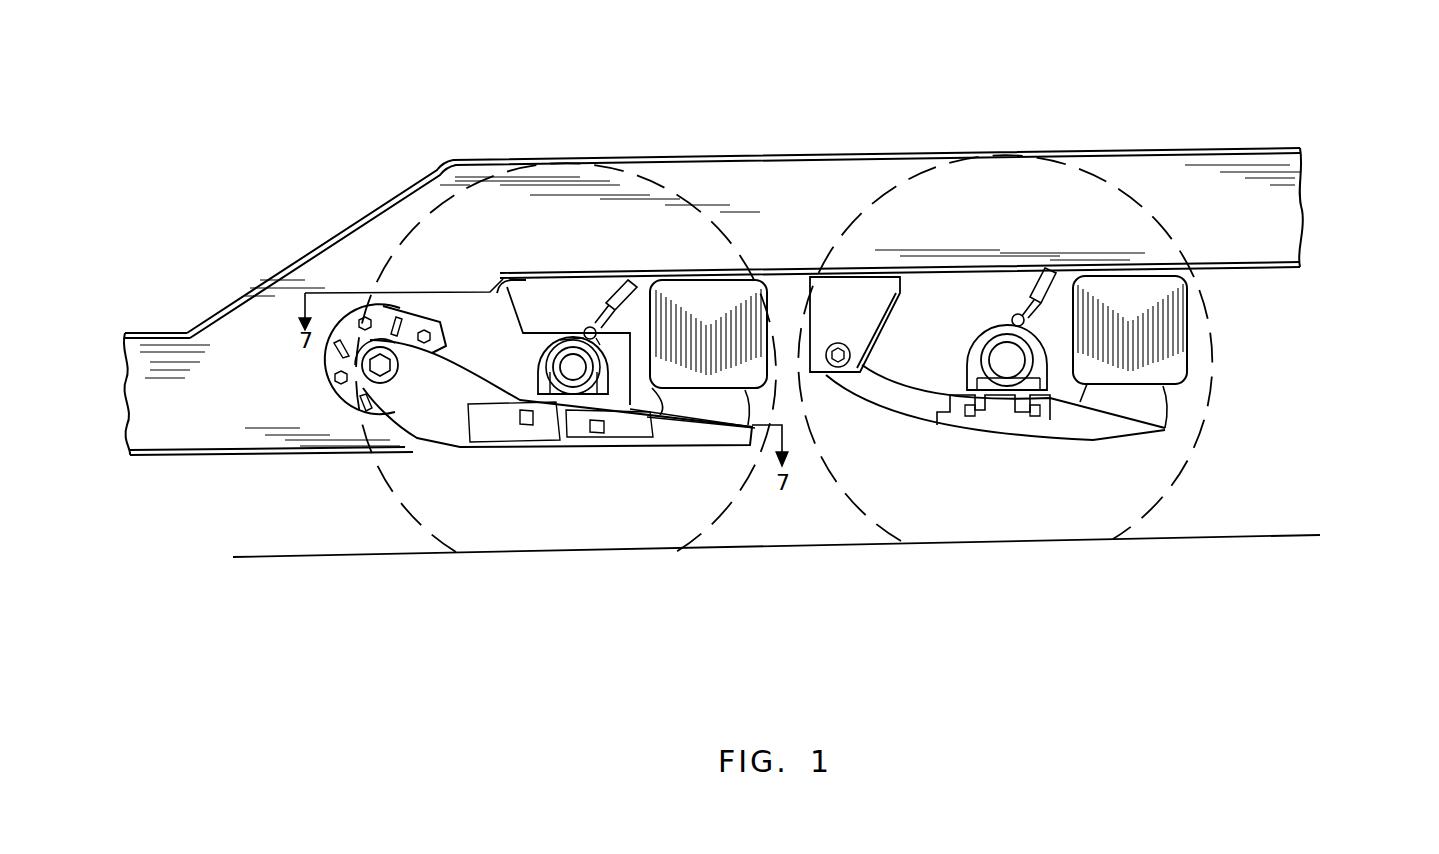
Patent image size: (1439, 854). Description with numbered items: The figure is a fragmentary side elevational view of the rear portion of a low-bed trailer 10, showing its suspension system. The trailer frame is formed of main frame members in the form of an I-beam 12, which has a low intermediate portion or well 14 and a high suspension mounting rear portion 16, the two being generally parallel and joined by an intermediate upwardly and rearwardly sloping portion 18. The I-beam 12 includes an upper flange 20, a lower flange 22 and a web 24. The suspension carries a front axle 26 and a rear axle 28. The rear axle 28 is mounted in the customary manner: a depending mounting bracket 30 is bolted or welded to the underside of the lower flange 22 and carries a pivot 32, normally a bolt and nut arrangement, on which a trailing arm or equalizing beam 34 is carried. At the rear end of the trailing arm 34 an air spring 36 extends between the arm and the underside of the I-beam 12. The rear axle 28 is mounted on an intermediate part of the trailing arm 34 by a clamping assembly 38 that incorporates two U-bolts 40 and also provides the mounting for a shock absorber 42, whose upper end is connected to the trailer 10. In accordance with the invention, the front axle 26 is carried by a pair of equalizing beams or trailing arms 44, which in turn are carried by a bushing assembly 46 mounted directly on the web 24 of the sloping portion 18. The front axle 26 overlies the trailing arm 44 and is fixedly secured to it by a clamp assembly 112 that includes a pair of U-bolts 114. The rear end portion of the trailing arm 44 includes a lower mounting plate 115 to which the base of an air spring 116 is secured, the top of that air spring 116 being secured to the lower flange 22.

The trailer 10 is at (837, 136).
The I-beam 12 is at (489, 150).
The low intermediate portion or well 14 is at (160, 334).
The high suspension mounting rear portion 16 is at (1145, 147).
The intermediate upwardly and rearwardly sloping portion 18 is at (368, 250).
The upper flange 20 is at (317, 253).
The lower flange 22 is at (193, 460).
The web 24 is at (229, 410).
The front axle 26 is at (560, 363).
The rear axle 28 is at (1040, 347).
The mounting bracket 30 is at (875, 308).
The pivot 32 is at (835, 343).
The trailing arm or equalizing beam 34 is at (908, 415).
The air spring 36 is at (1163, 302).
The clamping assembly 38 is at (967, 373).
The U-bolts 40 is at (987, 347).
The shock absorber 42 is at (1040, 288).
The equalizing beams or trailing arms 44 is at (452, 457).
The bushing assembly 46 is at (307, 363).
The clamp assembly 112 is at (616, 398).
The U-bolts 114 is at (545, 340).
The lower mounting plate 115 is at (703, 435).
The air spring 116 is at (738, 292).